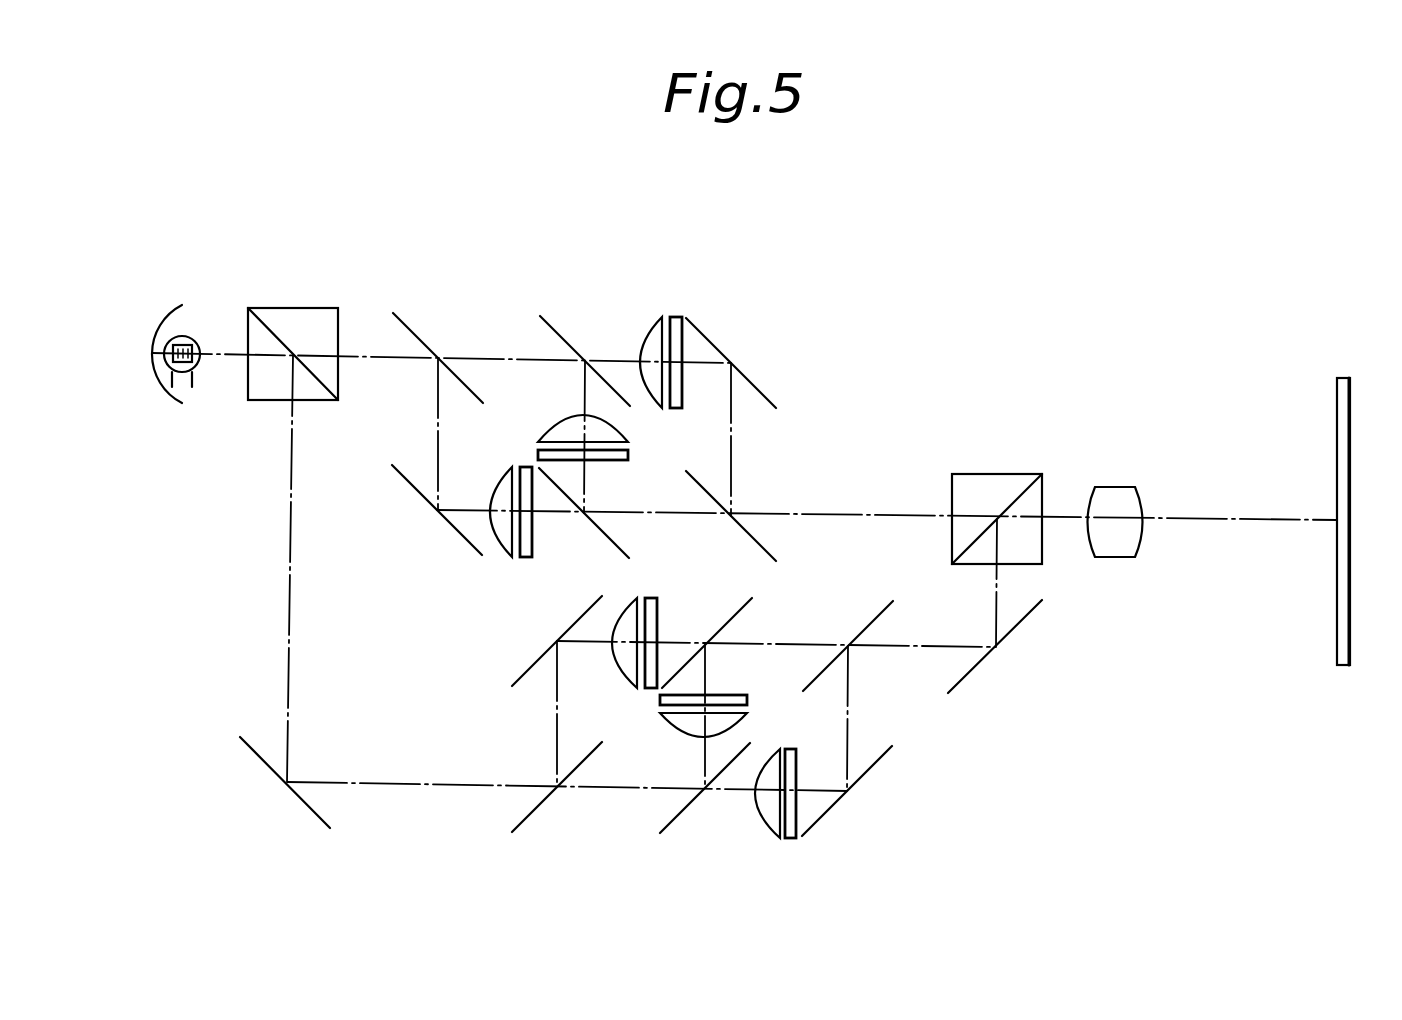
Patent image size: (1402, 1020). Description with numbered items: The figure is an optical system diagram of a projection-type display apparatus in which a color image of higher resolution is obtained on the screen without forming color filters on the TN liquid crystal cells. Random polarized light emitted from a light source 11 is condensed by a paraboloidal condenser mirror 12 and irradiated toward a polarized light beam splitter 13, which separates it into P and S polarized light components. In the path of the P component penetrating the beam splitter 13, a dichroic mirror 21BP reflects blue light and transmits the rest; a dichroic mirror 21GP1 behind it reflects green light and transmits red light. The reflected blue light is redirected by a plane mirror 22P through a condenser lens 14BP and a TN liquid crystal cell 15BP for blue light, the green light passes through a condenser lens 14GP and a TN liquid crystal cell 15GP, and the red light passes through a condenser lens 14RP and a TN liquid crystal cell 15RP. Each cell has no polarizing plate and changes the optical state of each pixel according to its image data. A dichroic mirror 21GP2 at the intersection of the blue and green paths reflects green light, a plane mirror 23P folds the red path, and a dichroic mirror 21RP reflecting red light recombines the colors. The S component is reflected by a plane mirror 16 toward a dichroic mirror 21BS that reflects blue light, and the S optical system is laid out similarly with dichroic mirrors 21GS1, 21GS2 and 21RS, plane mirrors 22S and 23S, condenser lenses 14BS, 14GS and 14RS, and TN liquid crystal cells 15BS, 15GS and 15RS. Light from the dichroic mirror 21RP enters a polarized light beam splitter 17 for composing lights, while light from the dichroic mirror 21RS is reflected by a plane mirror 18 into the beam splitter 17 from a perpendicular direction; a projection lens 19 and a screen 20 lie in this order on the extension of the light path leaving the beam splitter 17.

The light source 11 is at (192, 337).
The paraboloidal condenser mirror 12 is at (182, 303).
The polarized light beam splitter 13 is at (290, 323).
The dichroic mirror 21BP is at (410, 320).
The dichroic mirror 21GP1 is at (558, 328).
The dichroic mirror 21GP2 is at (613, 540).
The dichroic mirror 21RP is at (758, 538).
The condenser lens 14RP is at (653, 337).
The TN liquid crystal cell 15RP is at (683, 317).
The condenser lens 14GP is at (558, 430).
The TN liquid crystal cell 15GP is at (610, 460).
The condenser lens 14BP is at (493, 488).
The TN liquid crystal cell 15BP is at (522, 558).
The plane mirror 22P is at (410, 487).
The plane mirror 23P is at (723, 348).
The polarized light beam splitter 17 is at (1000, 478).
The plane mirror 18 is at (1017, 623).
The projection lens 19 is at (1115, 495).
The screen 20 is at (1342, 388).
The plane mirror 16 is at (310, 812).
The dichroic mirror 21BS is at (523, 808).
The dichroic mirror 21GS1 is at (665, 826).
The dichroic mirror 21GS2 is at (733, 627).
The dichroic mirror 21RS is at (867, 628).
The condenser lens 14BS is at (617, 660).
The TN liquid crystal cell 15BS is at (657, 618).
The condenser lens 14GS is at (740, 717).
The TN liquid crystal cell 15GS is at (715, 670).
The condenser lens 14RS is at (765, 813).
The TN liquid crystal cell 15RS is at (790, 838).
The plane mirror 22S is at (537, 660).
The plane mirror 23S is at (835, 803).